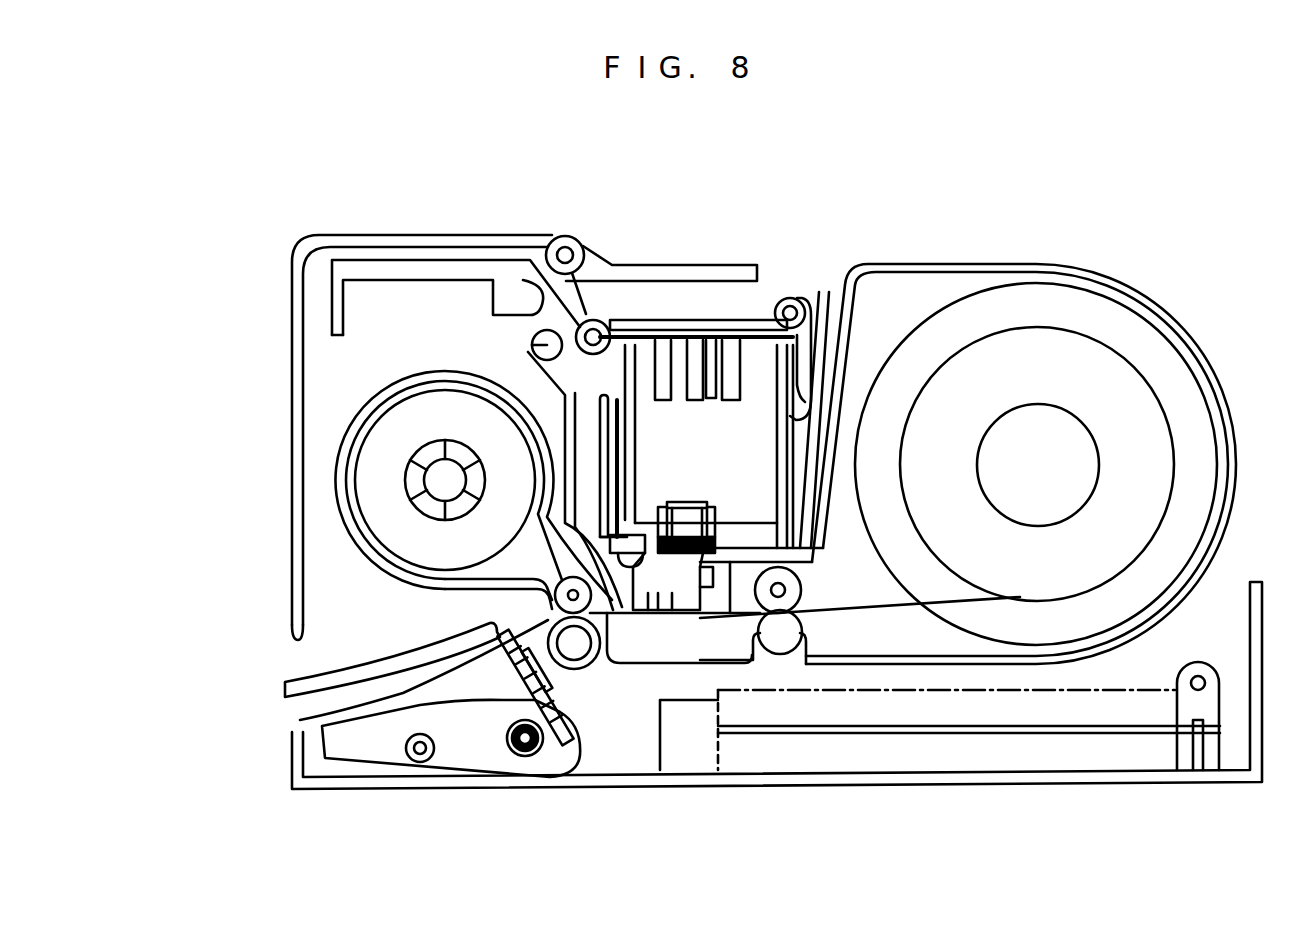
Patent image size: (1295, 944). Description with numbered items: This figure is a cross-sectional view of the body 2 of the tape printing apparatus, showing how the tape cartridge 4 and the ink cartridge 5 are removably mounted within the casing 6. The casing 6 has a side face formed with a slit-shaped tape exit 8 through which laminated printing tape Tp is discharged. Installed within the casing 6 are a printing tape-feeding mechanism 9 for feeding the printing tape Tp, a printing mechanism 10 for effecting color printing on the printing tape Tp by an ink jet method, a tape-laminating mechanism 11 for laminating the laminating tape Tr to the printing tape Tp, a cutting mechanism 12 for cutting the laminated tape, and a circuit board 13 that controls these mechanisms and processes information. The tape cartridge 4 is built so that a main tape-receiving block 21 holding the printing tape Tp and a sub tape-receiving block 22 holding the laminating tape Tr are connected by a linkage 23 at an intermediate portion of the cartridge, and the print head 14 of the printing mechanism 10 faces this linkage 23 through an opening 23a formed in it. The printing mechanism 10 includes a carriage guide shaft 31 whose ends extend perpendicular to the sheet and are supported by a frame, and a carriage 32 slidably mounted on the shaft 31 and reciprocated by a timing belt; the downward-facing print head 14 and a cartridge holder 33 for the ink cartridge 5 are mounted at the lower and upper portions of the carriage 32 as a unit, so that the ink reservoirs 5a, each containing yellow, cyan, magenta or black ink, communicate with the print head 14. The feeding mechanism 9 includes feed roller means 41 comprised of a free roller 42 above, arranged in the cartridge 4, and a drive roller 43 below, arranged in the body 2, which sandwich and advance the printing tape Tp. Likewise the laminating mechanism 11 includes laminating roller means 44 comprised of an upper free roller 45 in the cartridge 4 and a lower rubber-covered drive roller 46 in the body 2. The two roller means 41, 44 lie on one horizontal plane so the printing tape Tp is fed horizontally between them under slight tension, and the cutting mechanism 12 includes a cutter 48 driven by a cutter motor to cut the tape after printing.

The body 2 is at (1020, 214).
The tape cartridge 4 is at (962, 263).
The ink cartridge 5 is at (767, 320).
The ink reservoirs 5a is at (674, 464).
The casing 6 is at (291, 312).
The tape exit 8 is at (291, 637).
The printing tape-feeding mechanism 9 is at (837, 631).
The printing mechanism 10 is at (667, 305).
The tape-laminating mechanism 11 is at (623, 718).
The cutting mechanism 12 is at (467, 777).
The circuit board 13 is at (1053, 772).
The print head 14 is at (663, 612).
The main tape-receiving block 21 is at (898, 295).
The sub tape-receiving block 22 is at (411, 379).
The linkage 23 is at (712, 603).
The opening 23a is at (745, 653).
The carriage guide shaft 31 is at (532, 344).
The carriage 32 is at (566, 432).
The cartridge holder 33 is at (819, 292).
The feed roller means 41 is at (820, 744).
The free roller 42 is at (795, 596).
The drive roller 43 is at (783, 645).
The laminating roller means 44 is at (576, 741).
The free roller 45 is at (577, 650).
The drive roller 46 is at (583, 601).
The cutter 48 is at (497, 660).
The printing tape Tp is at (890, 606).
The laminating tape Tr is at (540, 540).